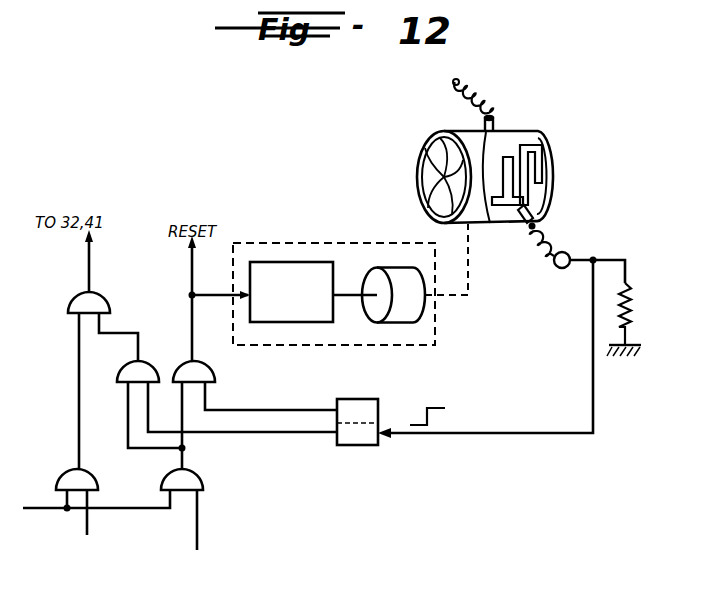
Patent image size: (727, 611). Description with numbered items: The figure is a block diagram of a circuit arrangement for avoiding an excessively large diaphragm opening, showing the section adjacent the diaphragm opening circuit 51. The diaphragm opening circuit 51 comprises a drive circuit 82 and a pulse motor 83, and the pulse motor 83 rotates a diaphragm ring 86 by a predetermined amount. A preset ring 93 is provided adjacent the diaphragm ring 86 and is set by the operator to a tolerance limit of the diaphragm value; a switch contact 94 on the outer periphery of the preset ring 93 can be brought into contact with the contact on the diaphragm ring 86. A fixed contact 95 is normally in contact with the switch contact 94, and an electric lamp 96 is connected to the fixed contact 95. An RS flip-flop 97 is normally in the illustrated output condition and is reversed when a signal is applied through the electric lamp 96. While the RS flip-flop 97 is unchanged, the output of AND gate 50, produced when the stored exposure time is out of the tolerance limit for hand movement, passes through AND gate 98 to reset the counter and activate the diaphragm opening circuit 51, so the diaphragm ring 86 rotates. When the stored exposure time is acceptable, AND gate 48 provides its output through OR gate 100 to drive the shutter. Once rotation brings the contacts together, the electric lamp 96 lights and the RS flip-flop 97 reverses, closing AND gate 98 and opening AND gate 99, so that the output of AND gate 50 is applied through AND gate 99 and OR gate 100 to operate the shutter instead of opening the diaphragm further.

The OR gate 100 is at (108, 298).
The AND gate 99 is at (127, 373).
The AND gate 98 is at (203, 376).
The AND gate 48 is at (90, 478).
The AND gate 50 is at (195, 482).
The diaphragm opening circuit 51 is at (350, 243).
The drive circuit 82 is at (305, 313).
The pulse motor 83 is at (405, 317).
The diaphragm ring 86 is at (490, 215).
The preset ring 93 is at (548, 155).
The switch contact 94 is at (543, 182).
The fixed contact 95 is at (540, 218).
The electric lamp 96 is at (558, 266).
The RS flip-flop 97 is at (360, 445).